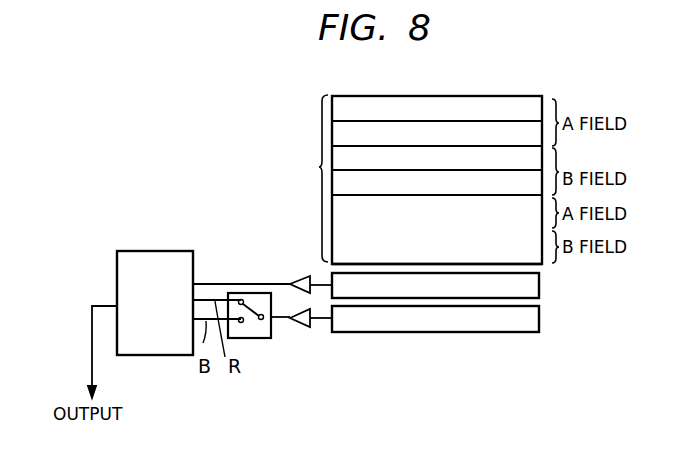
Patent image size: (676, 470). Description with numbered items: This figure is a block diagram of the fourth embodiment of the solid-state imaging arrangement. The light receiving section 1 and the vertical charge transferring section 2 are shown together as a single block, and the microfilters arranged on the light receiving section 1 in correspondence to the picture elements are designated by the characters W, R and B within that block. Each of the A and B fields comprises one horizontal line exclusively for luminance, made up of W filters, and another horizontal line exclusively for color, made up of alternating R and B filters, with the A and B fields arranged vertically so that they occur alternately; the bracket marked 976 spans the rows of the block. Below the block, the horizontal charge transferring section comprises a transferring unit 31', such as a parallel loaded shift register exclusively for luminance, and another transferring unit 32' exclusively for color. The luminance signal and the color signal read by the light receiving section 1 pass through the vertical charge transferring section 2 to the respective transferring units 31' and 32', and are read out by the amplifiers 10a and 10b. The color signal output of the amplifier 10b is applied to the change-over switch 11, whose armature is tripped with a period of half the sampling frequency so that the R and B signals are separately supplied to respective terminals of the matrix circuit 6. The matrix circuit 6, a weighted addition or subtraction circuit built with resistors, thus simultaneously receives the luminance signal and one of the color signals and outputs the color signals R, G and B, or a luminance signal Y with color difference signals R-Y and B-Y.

The light receiving section 1 is at (542, 96).
The vertical charge transferring section 2 is at (455, 164).
The memory lines 976 is at (305, 178).
The matrix circuit 6 is at (172, 251).
The amplifier 10a is at (303, 277).
The amplifier 10b is at (298, 333).
The change-over switch 11 is at (263, 338).
The transferring unit 31' is at (471, 288).
The transferring unit 32' is at (471, 322).